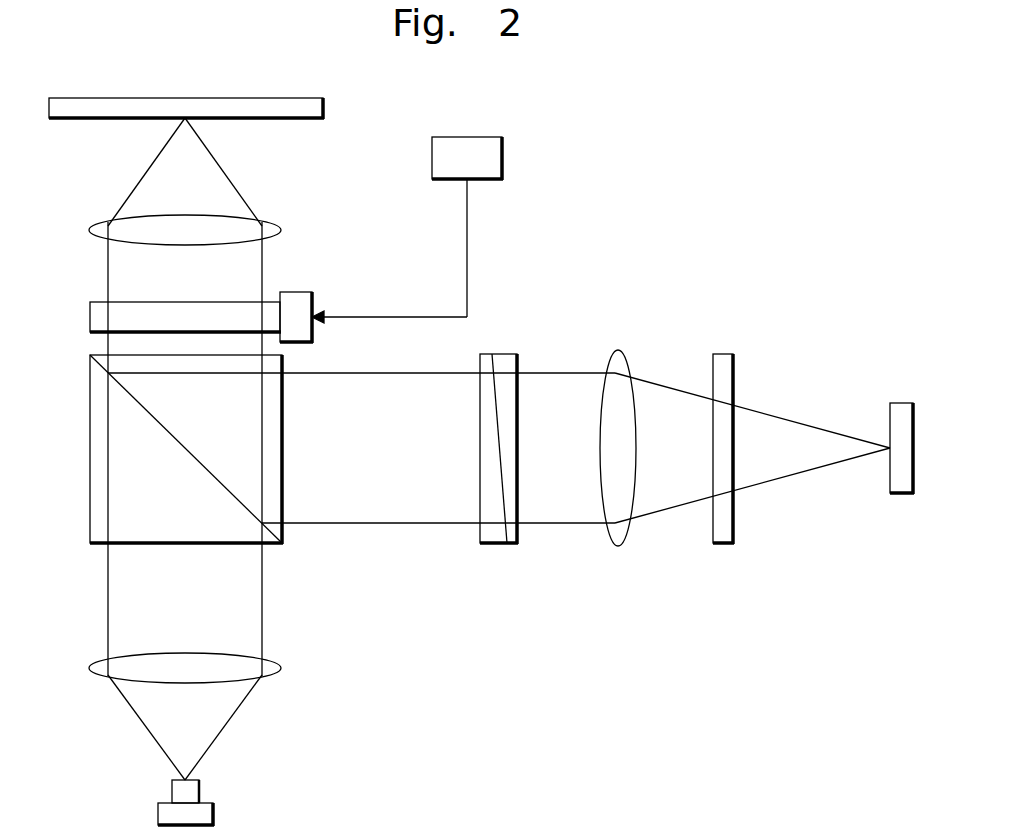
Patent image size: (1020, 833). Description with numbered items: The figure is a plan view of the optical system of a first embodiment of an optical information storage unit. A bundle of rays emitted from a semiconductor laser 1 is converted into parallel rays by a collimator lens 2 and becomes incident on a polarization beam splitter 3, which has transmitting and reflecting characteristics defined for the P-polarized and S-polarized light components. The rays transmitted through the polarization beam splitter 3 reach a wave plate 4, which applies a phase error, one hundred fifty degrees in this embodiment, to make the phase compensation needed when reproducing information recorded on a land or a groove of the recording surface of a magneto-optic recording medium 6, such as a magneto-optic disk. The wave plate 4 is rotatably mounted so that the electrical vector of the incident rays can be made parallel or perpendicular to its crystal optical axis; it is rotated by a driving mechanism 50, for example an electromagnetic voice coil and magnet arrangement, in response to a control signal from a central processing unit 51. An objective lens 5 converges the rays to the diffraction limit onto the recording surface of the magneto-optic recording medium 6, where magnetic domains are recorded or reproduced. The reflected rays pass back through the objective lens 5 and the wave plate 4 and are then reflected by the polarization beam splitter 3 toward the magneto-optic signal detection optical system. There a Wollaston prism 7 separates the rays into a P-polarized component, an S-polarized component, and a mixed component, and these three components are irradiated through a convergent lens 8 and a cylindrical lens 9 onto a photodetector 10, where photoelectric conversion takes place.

The semiconductor laser 1 is at (213, 812).
The collimator lens 2 is at (277, 668).
The polarization beam splitter 3 is at (100, 487).
The wave plate 4 is at (90, 312).
The objective lens 5 is at (281, 233).
The magneto-optic recording medium 6 is at (323, 108).
The Wollaston prism 7 is at (503, 382).
The convergent lens 8 is at (620, 535).
The cylindrical lens 9 is at (722, 533).
The photodetector 10 is at (902, 410).
The driving mechanism 50 is at (312, 330).
The central processing unit (CPU) 51 is at (503, 153).